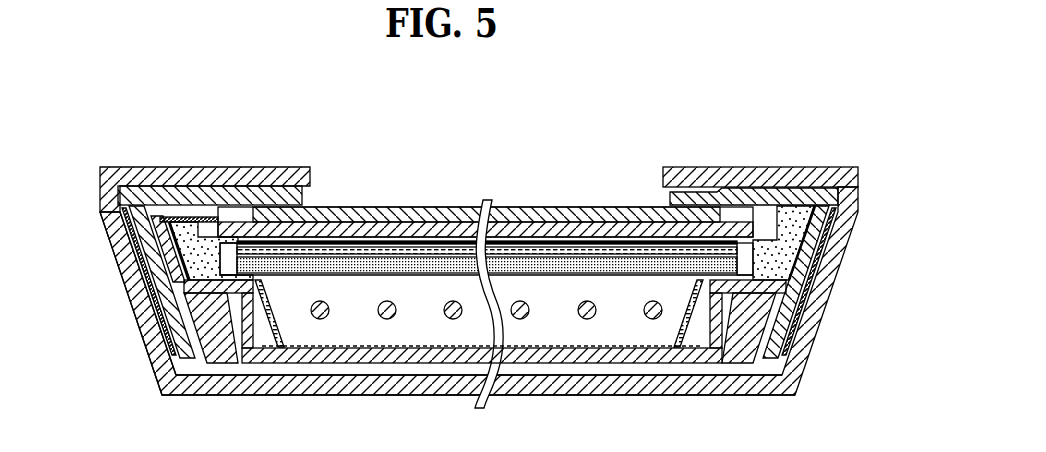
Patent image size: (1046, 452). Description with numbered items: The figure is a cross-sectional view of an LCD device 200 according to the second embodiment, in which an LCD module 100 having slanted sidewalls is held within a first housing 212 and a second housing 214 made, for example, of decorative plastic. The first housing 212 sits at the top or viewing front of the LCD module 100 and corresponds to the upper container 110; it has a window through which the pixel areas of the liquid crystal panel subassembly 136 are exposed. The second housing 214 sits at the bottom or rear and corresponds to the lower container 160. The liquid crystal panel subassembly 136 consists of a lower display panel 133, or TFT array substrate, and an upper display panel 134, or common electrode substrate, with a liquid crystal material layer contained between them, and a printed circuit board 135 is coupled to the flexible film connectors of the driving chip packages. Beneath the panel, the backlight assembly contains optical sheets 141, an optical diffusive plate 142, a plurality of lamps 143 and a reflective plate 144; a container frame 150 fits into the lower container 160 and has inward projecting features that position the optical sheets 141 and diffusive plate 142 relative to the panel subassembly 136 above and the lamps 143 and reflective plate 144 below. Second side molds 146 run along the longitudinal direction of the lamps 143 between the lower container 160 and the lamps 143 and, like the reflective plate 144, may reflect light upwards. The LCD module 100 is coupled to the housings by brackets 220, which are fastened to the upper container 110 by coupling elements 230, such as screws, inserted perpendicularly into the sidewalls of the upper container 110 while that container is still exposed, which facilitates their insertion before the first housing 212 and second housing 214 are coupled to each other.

The LCD module 100 is at (486, 272).
The upper container section 110 is at (225, 180).
The lower display panel 133 is at (383, 232).
The upper display panel 134 is at (342, 212).
The printed circuit board 135 is at (131, 273).
The liquid crystal panel subassembly 136 is at (407, 145).
The optical sheets 141 is at (815, 276).
The optical diffusive plate 142 is at (800, 292).
The lamps 143 is at (328, 315).
The reflective plate 144 is at (442, 377).
The second side molds 146 is at (272, 303).
The container frame 150 is at (124, 231).
The lower container section 160 is at (340, 388).
The LCD device 200 is at (479, 230).
The first housing 212 is at (100, 192).
The second housing 214 is at (128, 250).
The brackets 220 is at (143, 330).
The coupling elements 230 is at (133, 288).